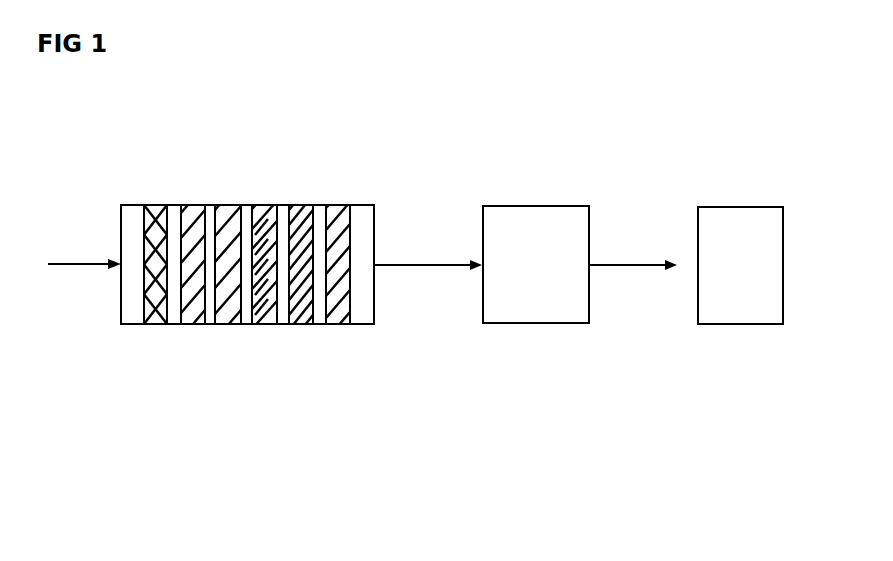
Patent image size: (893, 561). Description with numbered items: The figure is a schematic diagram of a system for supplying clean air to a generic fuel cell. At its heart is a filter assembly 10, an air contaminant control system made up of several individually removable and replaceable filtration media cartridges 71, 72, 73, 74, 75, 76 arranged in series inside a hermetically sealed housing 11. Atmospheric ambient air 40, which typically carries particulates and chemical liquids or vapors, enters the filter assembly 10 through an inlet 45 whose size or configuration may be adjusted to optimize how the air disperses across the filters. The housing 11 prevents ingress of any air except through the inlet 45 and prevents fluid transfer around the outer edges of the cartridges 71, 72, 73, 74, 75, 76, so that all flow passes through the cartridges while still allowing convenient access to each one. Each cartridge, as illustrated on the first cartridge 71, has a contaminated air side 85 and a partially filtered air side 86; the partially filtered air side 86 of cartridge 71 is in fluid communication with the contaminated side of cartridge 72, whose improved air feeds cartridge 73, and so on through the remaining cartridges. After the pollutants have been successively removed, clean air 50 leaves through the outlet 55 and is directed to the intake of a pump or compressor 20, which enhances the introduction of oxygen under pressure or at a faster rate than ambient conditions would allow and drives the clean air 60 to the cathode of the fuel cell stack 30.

The filter assembly 10 is at (181, 183).
The hermetically sealed housing 11 is at (297, 205).
The pump or compressor 20 is at (517, 205).
The fuel cell stack 30 is at (722, 206).
The atmospheric ambient air 40 is at (84, 275).
The inlet 45 is at (120, 251).
The clean air 50 is at (428, 252).
The outlet 55 is at (374, 277).
The clean air 60 is at (633, 252).
The filtration media cartridge 71 is at (153, 324).
The filtration media cartridge 72 is at (192, 324).
The filtration media cartridge 73 is at (227, 324).
The filtration media cartridge 74 is at (262, 324).
The filtration media cartridge 75 is at (298, 324).
The filtration media cartridge 76 is at (335, 324).
The contaminated air side 85 is at (158, 292).
The partially filtered air side 86 is at (168, 295).